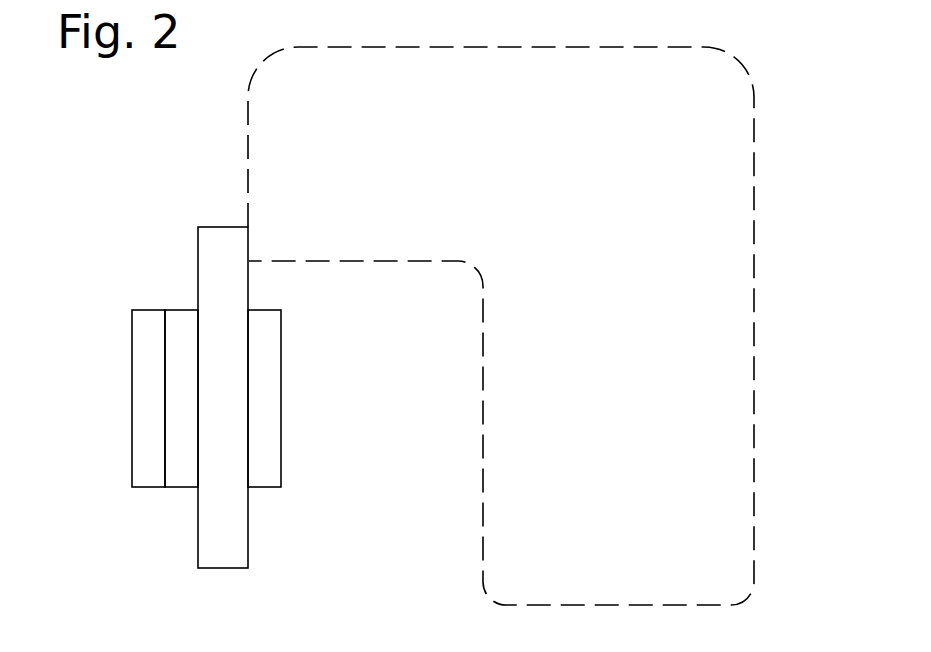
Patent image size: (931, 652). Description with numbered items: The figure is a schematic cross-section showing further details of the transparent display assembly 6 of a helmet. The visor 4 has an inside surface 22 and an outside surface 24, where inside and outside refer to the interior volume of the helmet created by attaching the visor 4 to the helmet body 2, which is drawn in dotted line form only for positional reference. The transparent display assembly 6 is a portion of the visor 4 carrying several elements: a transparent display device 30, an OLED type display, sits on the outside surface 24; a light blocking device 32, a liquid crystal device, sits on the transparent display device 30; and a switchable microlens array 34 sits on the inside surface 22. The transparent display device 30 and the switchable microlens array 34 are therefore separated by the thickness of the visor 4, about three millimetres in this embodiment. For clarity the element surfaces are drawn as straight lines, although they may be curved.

The helmet body 2 is at (558, 95).
The visor 4 is at (222, 541).
The transparent display assembly 6 is at (143, 195).
The inside surface 22 is at (250, 290).
The outside surface 24 is at (197, 338).
The transparent display device 30 is at (182, 462).
The light blocking device 32 is at (148, 457).
The switchable microlens array 34 is at (263, 463).